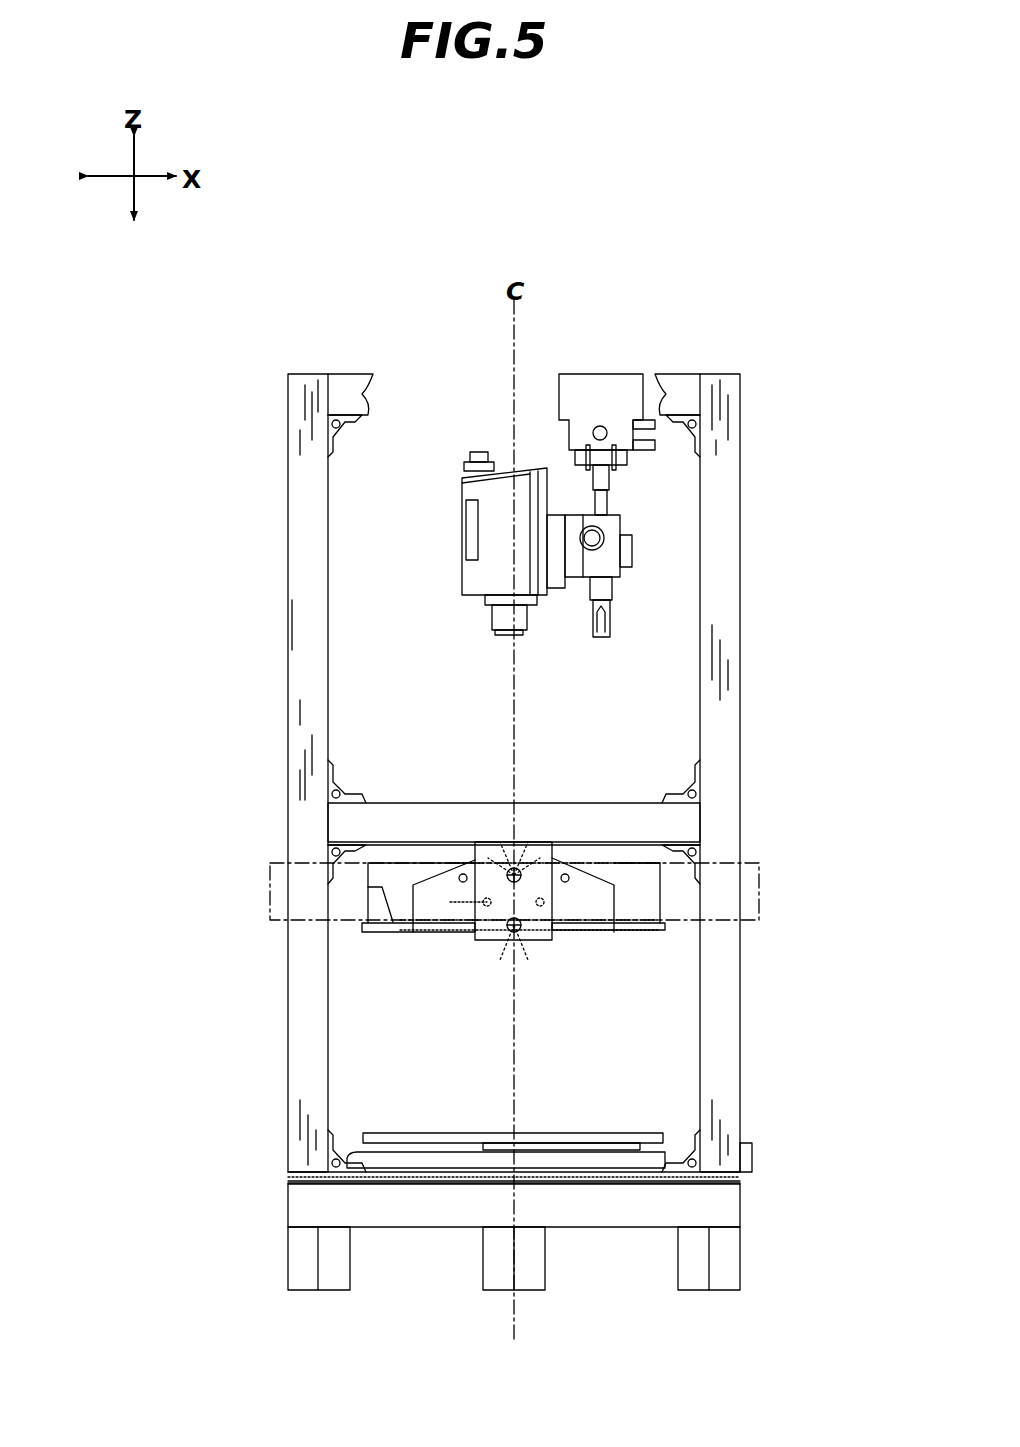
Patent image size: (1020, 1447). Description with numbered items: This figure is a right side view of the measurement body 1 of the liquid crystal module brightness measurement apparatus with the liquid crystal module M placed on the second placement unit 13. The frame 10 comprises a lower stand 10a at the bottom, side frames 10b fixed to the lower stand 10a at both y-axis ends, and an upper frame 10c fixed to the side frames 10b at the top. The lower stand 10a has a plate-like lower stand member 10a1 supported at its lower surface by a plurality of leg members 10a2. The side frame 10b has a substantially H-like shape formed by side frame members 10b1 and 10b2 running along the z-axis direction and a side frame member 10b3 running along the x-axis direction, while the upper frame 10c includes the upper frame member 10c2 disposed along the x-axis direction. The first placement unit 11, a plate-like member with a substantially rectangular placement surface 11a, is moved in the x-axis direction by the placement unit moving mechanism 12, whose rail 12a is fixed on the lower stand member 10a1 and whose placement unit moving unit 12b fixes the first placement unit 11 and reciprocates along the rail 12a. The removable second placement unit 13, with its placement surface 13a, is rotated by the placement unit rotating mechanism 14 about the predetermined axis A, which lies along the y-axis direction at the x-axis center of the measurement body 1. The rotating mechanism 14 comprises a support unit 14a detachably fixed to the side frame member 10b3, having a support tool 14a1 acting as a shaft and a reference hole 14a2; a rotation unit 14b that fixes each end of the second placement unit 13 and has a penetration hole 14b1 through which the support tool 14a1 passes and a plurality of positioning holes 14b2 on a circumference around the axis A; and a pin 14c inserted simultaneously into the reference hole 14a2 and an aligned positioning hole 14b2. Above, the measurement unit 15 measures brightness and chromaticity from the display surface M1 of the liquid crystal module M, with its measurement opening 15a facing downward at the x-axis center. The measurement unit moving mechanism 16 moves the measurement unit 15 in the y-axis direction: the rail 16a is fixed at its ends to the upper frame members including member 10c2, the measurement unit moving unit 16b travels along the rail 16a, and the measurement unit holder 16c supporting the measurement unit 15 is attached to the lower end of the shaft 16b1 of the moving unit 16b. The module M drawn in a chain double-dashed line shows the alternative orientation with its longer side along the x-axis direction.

The measurement body 1 is at (626, 230).
The frame 10 is at (294, 368).
The lower stand 10a is at (284, 1190).
The lower stand member 10a1 is at (298, 1214).
The leg members 10a2 is at (302, 1292).
The side frame 10b is at (284, 408).
The side frame member 10b1 is at (302, 472).
The side frame member 10b2 is at (724, 523).
The side frame member 10b3 is at (622, 815).
The upper frame 10c is at (336, 372).
The upper frame member 10c2 is at (348, 381).
The first placement unit 11 is at (562, 1134).
The placement surface 11a is at (600, 1145).
The placement unit moving mechanism 12 is at (352, 1150).
The rail 12a is at (437, 1162).
The placement unit moving unit 12b is at (562, 1185).
The second placement unit 13 is at (383, 924).
The placement surface 13a is at (382, 887).
The placement unit rotating mechanism 14 is at (420, 995).
The support unit 14a is at (492, 942).
The support tool 14a1 is at (480, 858).
The reference hole 14a2 is at (520, 938).
The rotation unit 14b is at (637, 910).
The penetration hole 14b1 is at (512, 866).
The positioning holes 14b2 is at (461, 875).
The pin 14c is at (518, 934).
The measurement unit 15 is at (464, 498).
The measurement opening 15a is at (498, 630).
The measurement unit moving mechanism 16 is at (554, 441).
The rail 16a is at (592, 382).
The measurement unit moving unit 16b is at (622, 460).
The shaft 16b1 is at (608, 500).
The measurement unit holder 16c is at (612, 570).
The predetermined axis A is at (522, 856).
The liquid crystal module M is at (760, 896).
The display surface M1 is at (617, 865).